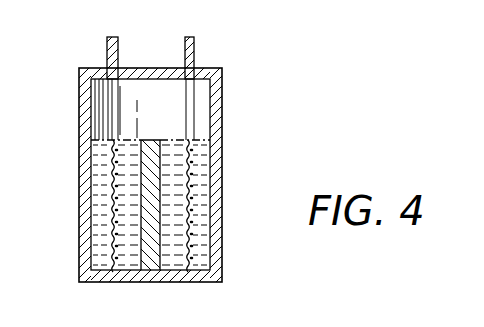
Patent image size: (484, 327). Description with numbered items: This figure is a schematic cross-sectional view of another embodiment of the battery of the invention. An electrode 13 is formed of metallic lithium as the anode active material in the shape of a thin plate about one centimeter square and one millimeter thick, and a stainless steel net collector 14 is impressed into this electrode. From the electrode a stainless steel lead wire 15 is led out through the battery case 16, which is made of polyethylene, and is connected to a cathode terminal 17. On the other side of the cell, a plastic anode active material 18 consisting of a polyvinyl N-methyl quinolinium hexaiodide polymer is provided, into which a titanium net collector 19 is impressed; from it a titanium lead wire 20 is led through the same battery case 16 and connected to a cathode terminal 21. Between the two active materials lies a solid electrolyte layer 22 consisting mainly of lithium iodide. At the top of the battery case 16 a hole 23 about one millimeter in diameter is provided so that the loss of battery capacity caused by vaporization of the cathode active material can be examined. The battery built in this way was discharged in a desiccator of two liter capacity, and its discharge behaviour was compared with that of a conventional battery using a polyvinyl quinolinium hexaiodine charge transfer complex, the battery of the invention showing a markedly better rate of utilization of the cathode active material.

The electrode 13 is at (202, 178).
The stainless steel net collector 14 is at (190, 212).
The stainless steel lead wire 15 is at (197, 105).
The battery case 16 is at (220, 68).
The cathode terminal 17 is at (193, 45).
The plastic anode active material 18 is at (103, 195).
The titanium net collector 19 is at (112, 238).
The titanium lead wire 20 is at (108, 110).
The cathode terminal 21 is at (113, 37).
The solid electrolyte layer 22 is at (157, 270).
The hole 23 is at (97, 80).